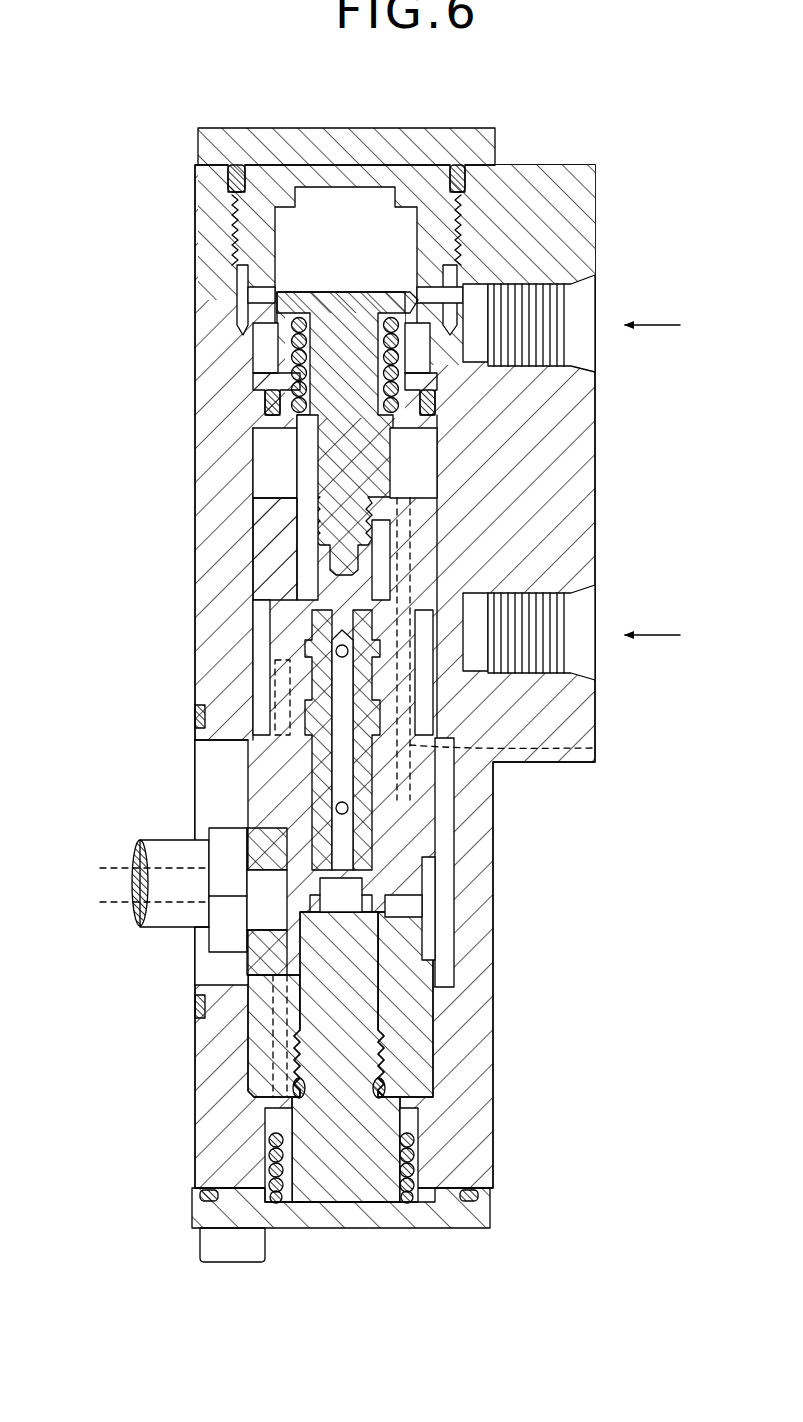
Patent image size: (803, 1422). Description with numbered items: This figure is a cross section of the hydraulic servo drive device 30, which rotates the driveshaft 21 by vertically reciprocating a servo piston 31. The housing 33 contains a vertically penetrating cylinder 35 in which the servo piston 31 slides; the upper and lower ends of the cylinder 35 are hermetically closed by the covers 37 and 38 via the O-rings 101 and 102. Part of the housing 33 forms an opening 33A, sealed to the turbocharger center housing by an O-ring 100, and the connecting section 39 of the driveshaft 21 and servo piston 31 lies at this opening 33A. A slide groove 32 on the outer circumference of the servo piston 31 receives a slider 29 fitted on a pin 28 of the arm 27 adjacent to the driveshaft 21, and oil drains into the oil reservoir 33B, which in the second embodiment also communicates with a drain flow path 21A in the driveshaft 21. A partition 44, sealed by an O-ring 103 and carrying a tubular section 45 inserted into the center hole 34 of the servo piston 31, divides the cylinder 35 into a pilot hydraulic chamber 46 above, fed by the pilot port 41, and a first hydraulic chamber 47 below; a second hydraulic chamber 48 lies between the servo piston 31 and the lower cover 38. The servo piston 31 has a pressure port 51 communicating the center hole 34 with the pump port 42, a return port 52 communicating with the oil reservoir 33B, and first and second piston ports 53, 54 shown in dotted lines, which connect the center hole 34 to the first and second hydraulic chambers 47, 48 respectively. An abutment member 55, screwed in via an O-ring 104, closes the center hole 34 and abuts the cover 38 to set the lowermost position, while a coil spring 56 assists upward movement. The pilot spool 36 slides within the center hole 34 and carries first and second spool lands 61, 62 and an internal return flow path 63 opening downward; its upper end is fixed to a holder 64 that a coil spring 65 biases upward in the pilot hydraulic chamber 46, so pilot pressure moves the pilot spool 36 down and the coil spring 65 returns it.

The hydraulic servo drive device 30 is at (328, 95).
The cover 37 is at (385, 135).
The housing 33 is at (585, 490).
The opening 33A is at (245, 745).
The oil reservoir 33B is at (238, 775).
The O-ring 101 is at (228, 172).
The pilot hydraulic chamber 46 is at (300, 265).
The holder 64 is at (335, 300).
The coil spring 65 is at (290, 340).
The partition 44 is at (262, 383).
The O-ring 103 is at (263, 400).
The tubular section 45 is at (268, 440).
The first hydraulic chamber 47 is at (418, 460).
The servo piston 31 is at (255, 500).
The cylinder 35 is at (305, 552).
The center hole 34 is at (300, 575).
The pilot spool 36 is at (262, 610).
The second piston port 54 is at (285, 685).
The first spool land 61 is at (370, 690).
The O-ring 100 is at (197, 715).
The pressure port 51 is at (355, 710).
The first piston port 53 is at (595, 748).
The slider 29 is at (270, 800).
The second spool land 62 is at (365, 790).
The pin 28 is at (265, 880).
The driveshaft 21 is at (150, 850).
The drain flow path 21A is at (135, 880).
The arm 27 is at (218, 896).
The connecting section 39 is at (232, 912).
The slide groove 32 is at (270, 955).
The return port 52 is at (400, 907).
The return flow path 63 is at (345, 878).
The O-ring 104 is at (293, 1090).
The second hydraulic chamber 48 is at (262, 1145).
The O-ring 102 is at (215, 1200).
The abutment member 55 is at (330, 1190).
The cover 38 is at (385, 1228).
The coil spring 56 is at (415, 1175).
The pilot port 41 is at (585, 290).
The pump port 42 is at (585, 598).